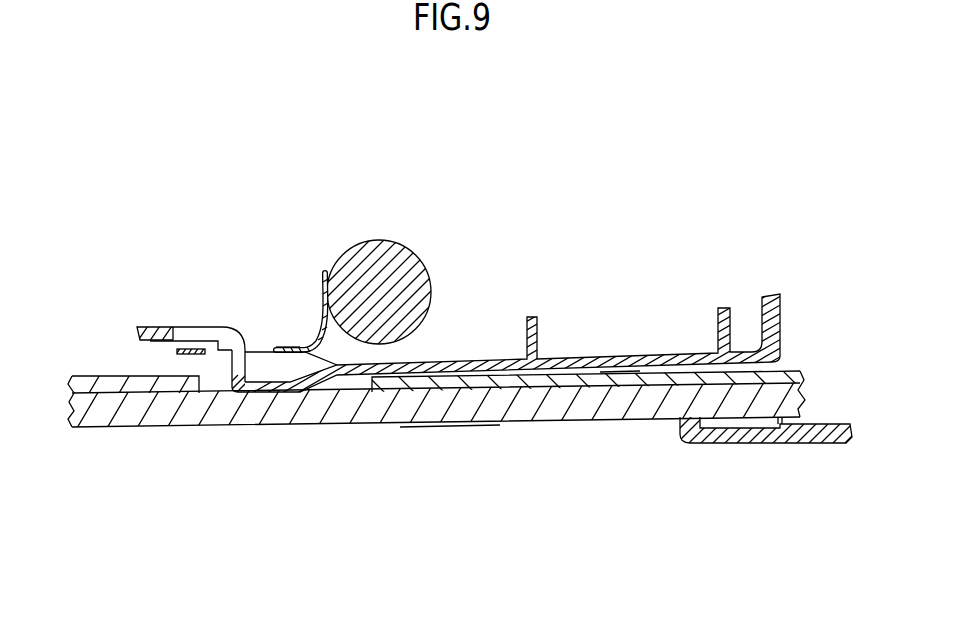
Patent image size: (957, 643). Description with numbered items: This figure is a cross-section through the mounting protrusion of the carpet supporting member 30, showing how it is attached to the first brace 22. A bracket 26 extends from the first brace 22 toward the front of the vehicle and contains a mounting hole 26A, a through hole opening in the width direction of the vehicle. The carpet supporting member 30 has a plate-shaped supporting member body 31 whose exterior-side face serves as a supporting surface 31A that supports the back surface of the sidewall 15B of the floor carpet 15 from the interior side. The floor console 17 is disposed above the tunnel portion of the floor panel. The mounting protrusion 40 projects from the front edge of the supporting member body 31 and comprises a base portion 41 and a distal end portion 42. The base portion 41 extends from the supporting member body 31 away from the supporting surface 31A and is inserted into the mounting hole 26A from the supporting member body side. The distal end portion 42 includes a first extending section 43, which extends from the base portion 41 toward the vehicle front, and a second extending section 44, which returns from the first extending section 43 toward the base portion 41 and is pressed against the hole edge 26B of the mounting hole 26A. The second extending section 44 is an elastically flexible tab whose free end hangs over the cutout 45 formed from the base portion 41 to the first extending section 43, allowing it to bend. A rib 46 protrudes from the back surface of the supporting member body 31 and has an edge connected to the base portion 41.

The floor carpet 15 is at (381, 437).
The sidewall 15B is at (447, 405).
The floor console 17 is at (763, 433).
The first brace 22 is at (382, 273).
The bracket 26 is at (287, 347).
The mounting hole 26A is at (272, 348).
The hole edge 26B is at (192, 348).
The carpet supporting member 30 is at (685, 347).
The supporting member body 31 is at (503, 366).
The supporting surface 31A is at (620, 372).
The mounting protrusion 40 is at (225, 422).
The base portion 41 is at (255, 403).
The distal end portion 42 is at (172, 441).
The first extending section 43 is at (150, 332).
The second extending section 44 is at (166, 344).
The cutout 45 is at (233, 348).
The rib 46 is at (297, 366).